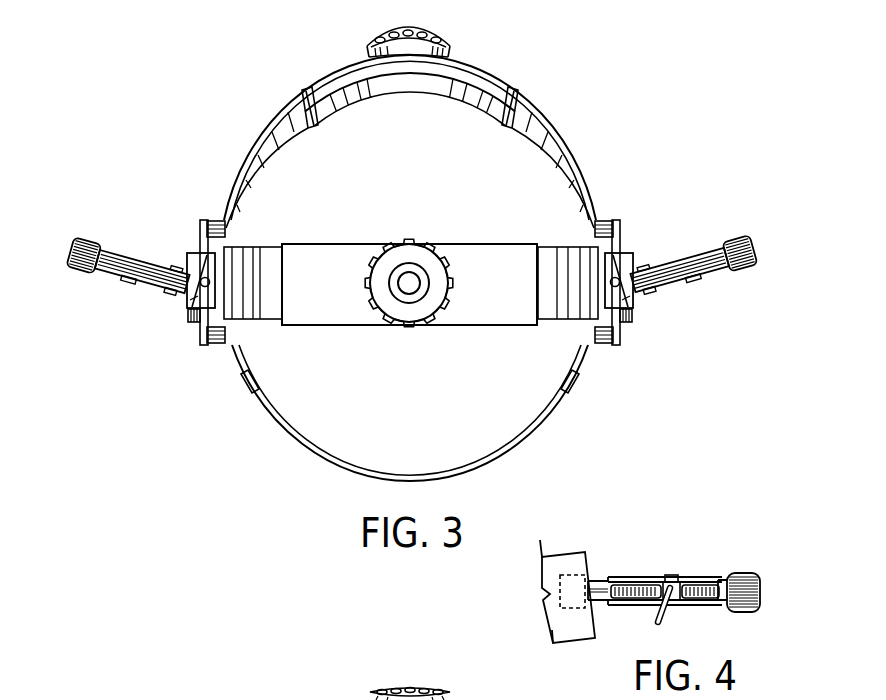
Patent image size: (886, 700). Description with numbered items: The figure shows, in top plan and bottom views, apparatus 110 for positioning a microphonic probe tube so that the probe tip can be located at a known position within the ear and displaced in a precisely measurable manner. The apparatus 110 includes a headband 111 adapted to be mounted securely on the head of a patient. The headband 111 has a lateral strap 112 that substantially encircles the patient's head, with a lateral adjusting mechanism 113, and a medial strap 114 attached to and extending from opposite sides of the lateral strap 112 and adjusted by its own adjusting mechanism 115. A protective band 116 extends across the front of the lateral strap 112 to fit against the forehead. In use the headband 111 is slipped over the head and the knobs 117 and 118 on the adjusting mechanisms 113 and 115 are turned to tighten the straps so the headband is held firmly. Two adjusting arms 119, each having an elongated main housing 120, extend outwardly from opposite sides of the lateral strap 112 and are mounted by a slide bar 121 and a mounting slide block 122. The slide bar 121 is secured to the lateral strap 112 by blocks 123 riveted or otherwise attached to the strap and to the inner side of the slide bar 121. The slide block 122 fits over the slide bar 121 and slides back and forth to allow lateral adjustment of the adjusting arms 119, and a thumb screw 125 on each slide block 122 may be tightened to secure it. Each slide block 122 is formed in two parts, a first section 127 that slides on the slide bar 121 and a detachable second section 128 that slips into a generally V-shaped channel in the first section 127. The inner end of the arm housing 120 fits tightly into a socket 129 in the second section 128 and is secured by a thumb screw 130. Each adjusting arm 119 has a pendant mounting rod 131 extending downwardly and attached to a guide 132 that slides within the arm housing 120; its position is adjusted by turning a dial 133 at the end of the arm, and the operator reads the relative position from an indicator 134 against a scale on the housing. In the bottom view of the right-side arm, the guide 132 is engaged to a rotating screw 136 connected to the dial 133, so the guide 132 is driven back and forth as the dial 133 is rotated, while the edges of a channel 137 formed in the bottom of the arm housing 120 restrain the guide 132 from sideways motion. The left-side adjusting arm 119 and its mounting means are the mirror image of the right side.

In FIG. 3, the apparatus 110 is at (573, 137).
In FIG. 3, the headband 111 is at (540, 437).
In FIG. 3, the lateral strap 112 is at (281, 105).
In FIG. 3, the lateral adjusting mechanism 113 is at (492, 70).
In FIG. 3, the medial strap 114 is at (262, 246).
In FIG. 3, the adjusting mechanism 115 is at (478, 243).
In FIG. 4, the adjusting mechanism 115 is at (530, 699).
In FIG. 3, the protective band 116 is at (353, 470).
In FIG. 3, the knob 117 is at (451, 44).
In FIG. 3, the knob 118 is at (418, 327).
In FIG. 4, the knob 118 is at (378, 688).
In FIG. 3, the adjusting arm 119 is at (105, 274).
In FIG. 4, the adjusting arm 119 is at (760, 592).
In FIG. 3, the main housing 120 is at (127, 255).
In FIG. 4, the main housing 120 is at (610, 577).
In FIG. 3, the slide bar 121 is at (205, 222).
In FIG. 3, the mounting slide block 122 is at (195, 253).
In FIG. 3, the blocks 123 is at (217, 220).
In FIG. 3, the thumb screw 125 is at (205, 288).
In FIG. 3, the first section 127 is at (200, 252).
In FIG. 3, the second section 128 is at (207, 290).
In FIG. 4, the second section 128 is at (570, 553).
In FIG. 4, the socket 129 is at (562, 610).
In FIG. 3, the thumb screw 130 is at (197, 322).
In FIG. 4, the pendant mounting rod 131 is at (686, 627).
In FIG. 4, the guide 132 is at (692, 580).
In FIG. 3, the dial 133 is at (83, 238).
In FIG. 4, the dial 133 is at (742, 573).
In FIG. 3, the indicator 134 is at (132, 284).
In FIG. 4, the indicator 134 is at (670, 575).
In FIG. 4, the rotating screw 136 is at (637, 600).
In FIG. 4, the channel 137 is at (703, 605).